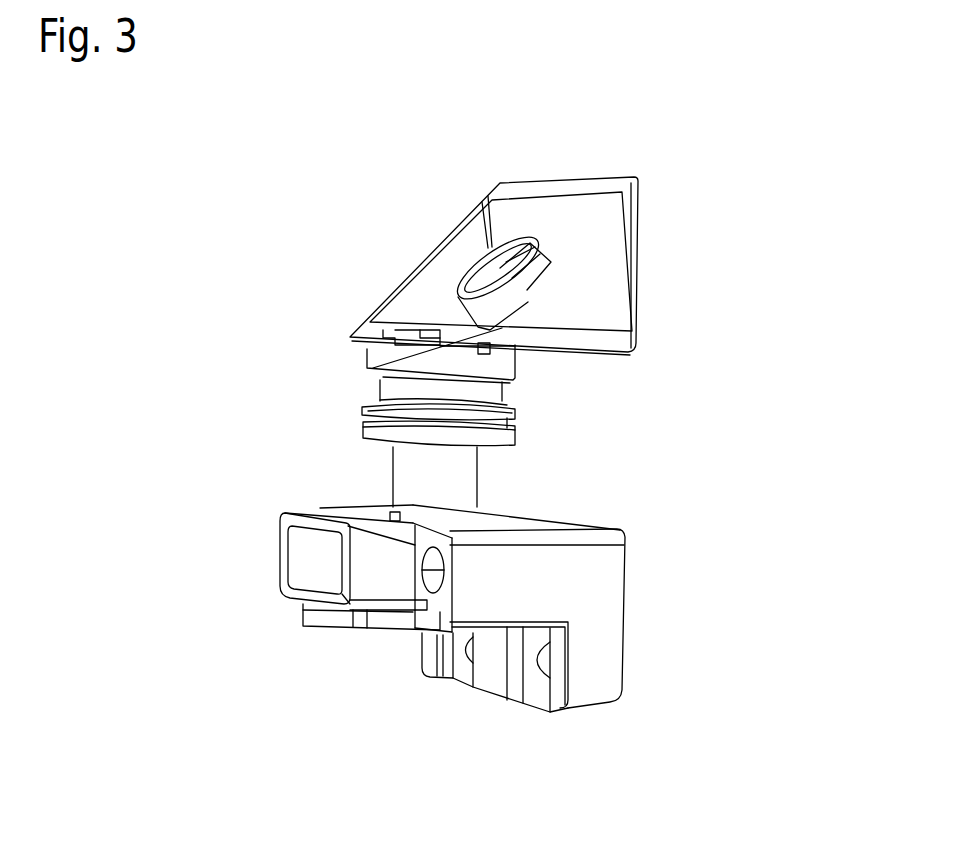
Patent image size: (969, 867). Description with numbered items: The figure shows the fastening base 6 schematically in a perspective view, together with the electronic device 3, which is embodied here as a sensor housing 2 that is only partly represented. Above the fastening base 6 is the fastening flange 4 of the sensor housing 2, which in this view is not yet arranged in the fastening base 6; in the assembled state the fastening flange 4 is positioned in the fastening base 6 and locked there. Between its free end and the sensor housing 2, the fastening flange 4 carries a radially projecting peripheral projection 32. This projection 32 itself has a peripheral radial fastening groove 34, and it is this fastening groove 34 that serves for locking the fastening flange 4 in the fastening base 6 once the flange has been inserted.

The sensor housing 2 is at (573, 222).
The electronic device 3 is at (660, 190).
The fastening flange 4 is at (441, 422).
The peripheral projection 32 is at (355, 405).
The fastening groove 34 is at (363, 422).
The fastening base 6 is at (582, 645).